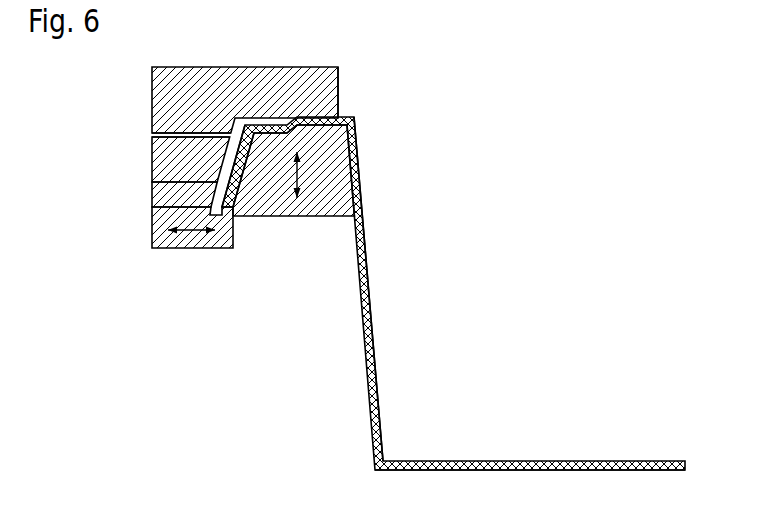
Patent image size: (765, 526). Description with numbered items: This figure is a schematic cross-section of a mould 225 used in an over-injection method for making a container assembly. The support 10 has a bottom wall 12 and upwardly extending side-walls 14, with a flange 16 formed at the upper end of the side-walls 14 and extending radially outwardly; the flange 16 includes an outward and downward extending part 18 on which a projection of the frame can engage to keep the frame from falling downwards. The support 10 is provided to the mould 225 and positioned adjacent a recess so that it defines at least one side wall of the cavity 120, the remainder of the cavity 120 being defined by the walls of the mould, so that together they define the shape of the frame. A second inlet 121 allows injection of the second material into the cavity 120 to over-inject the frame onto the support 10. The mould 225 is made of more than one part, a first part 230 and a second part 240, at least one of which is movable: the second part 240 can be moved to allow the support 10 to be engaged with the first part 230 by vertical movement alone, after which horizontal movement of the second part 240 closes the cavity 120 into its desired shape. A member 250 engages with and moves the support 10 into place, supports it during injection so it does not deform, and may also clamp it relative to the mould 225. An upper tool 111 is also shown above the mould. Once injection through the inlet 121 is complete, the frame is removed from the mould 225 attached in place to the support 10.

The support 10 is at (390, 277).
The bottom wall 12 is at (587, 461).
The side-walls 14 is at (375, 355).
The flange 16 is at (338, 100).
The outward and downward extending part 18 is at (228, 167).
The upper tool 111 is at (545, 0).
The cavity 120 is at (152, 182).
The second inlet 121 is at (165, 142).
The mould 225 is at (123, 115).
The first part 230 is at (297, 72).
The second part 240 is at (152, 228).
The member 250 is at (303, 216).